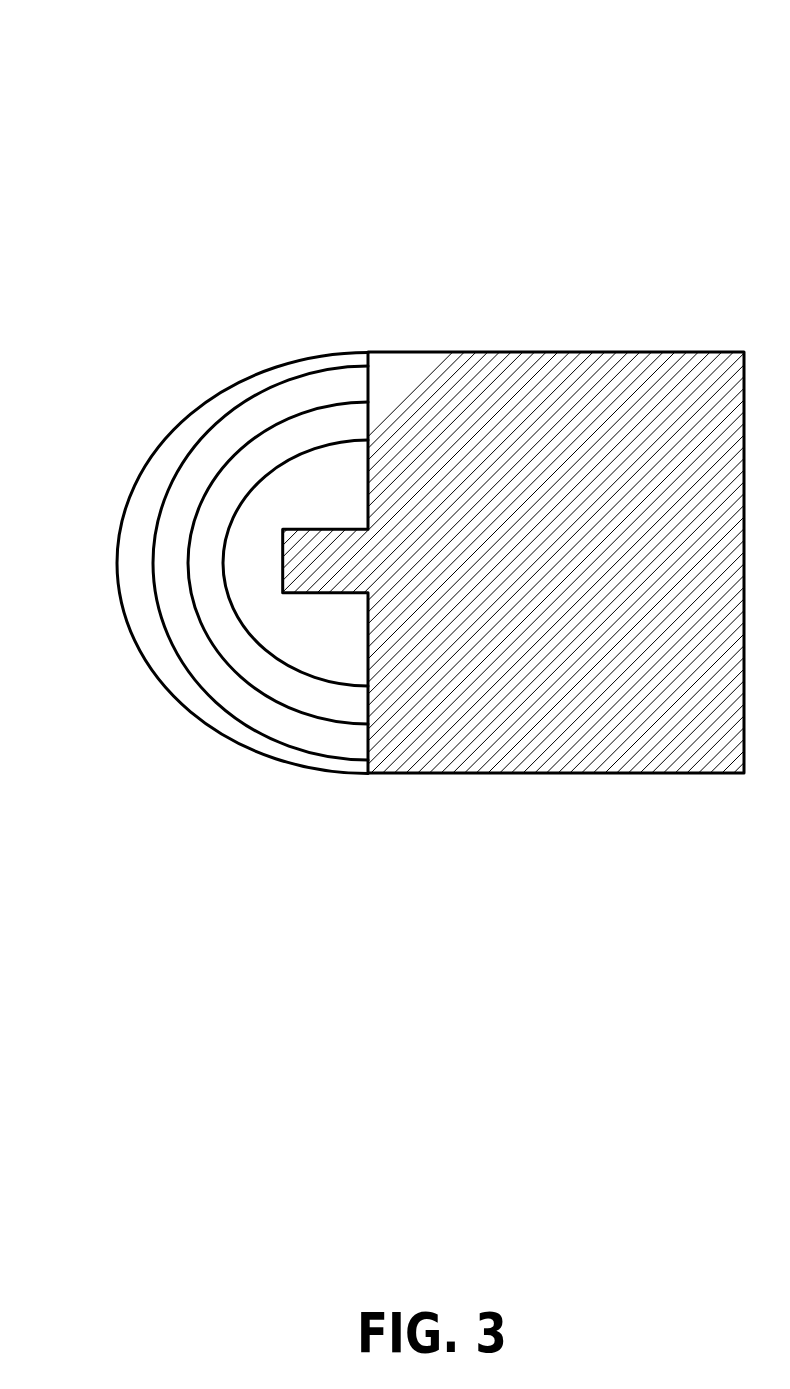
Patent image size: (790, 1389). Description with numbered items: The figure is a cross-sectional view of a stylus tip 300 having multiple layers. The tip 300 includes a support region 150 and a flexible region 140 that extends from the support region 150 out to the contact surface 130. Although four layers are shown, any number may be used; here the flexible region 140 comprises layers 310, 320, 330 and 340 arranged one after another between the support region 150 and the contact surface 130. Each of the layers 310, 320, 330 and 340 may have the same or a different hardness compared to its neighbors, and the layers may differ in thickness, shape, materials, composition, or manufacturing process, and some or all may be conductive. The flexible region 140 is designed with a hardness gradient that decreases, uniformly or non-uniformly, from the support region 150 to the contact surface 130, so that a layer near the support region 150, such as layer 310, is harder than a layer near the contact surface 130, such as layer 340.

The tip 300 is at (115, 105).
The contact surface 130 is at (218, 733).
The flexible region 140 is at (225, 574).
The support region 150 is at (327, 572).
The layer 310 is at (345, 480).
The layer 320 is at (270, 457).
The layer 330 is at (200, 473).
The layer 340 is at (139, 522).